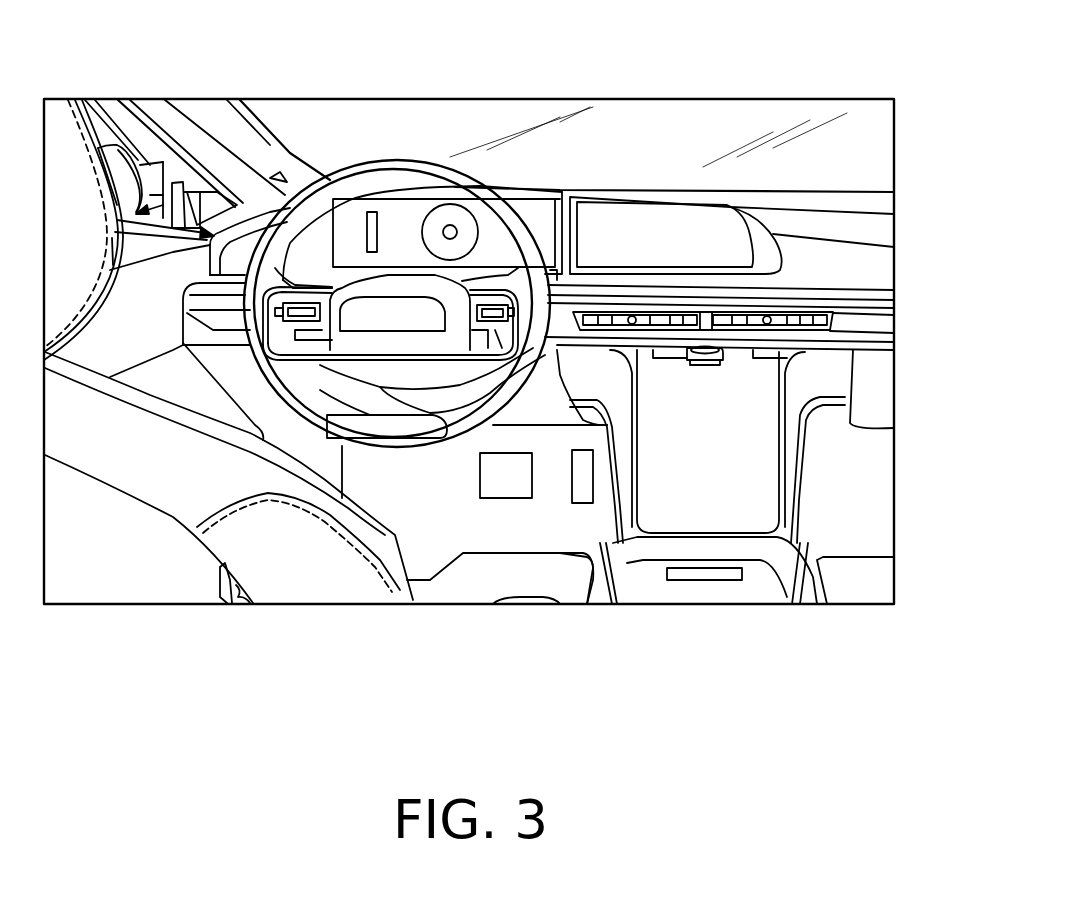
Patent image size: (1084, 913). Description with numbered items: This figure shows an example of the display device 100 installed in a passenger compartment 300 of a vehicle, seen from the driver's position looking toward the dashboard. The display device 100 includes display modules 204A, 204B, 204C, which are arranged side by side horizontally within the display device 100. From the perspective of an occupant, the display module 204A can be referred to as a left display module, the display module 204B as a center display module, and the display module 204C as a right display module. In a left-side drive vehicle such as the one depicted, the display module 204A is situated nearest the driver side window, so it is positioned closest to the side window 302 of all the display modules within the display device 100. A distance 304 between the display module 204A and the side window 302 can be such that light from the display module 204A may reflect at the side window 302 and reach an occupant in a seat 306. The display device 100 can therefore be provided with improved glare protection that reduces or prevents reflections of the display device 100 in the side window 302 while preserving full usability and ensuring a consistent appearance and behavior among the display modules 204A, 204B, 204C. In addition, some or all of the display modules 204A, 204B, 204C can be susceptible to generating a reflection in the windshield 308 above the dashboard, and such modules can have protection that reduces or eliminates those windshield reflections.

The display device 100 is at (793, 248).
The display module 204A is at (270, 200).
The display module 204B is at (510, 197).
The display module 204C is at (633, 200).
The passenger compartment 300 is at (863, 482).
The side window 302 is at (108, 138).
The distance 304 is at (192, 225).
The seat 306 is at (307, 570).
The windshield 308 is at (433, 132).